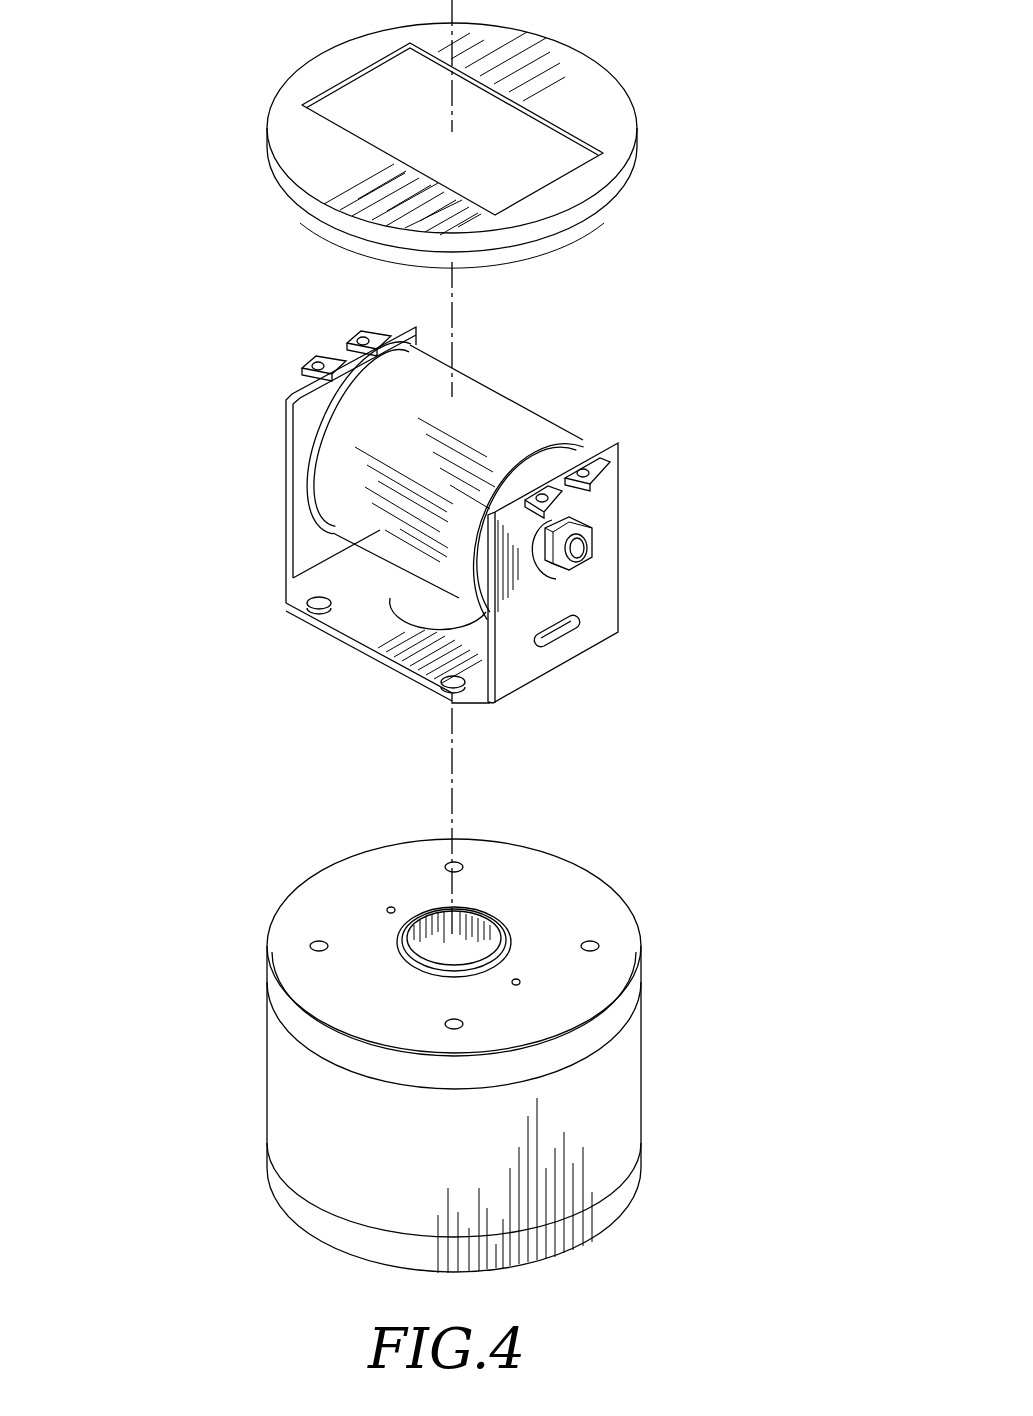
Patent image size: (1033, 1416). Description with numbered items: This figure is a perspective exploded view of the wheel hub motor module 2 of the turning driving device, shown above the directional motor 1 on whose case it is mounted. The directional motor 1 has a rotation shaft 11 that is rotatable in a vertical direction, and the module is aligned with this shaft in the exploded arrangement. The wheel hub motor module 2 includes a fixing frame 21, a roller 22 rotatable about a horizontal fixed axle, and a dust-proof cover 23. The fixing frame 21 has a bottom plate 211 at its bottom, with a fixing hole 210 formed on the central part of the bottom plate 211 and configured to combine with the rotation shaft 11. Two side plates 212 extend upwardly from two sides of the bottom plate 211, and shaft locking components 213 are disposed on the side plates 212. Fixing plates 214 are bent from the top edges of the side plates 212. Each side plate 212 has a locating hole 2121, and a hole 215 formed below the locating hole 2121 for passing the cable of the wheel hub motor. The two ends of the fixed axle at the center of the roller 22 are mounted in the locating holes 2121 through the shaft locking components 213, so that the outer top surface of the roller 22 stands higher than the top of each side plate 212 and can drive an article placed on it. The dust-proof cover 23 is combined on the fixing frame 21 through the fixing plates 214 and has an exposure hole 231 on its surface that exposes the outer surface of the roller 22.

The directional motor 1 is at (449, 1056).
The rotation shaft 11 is at (504, 950).
The wheel hub motor module 2 is at (275, 212).
The fixing frame 21 is at (278, 468).
The fixing hole 210 is at (407, 588).
The bottom plate 211 is at (342, 613).
The side plate 212 is at (508, 663).
The shaft locking component 213 is at (583, 553).
The fixing plate 214 is at (600, 467).
The hole 215 is at (560, 642).
The locating hole 2121 is at (343, 355).
The roller 22 is at (527, 417).
The dust-proof cover 23 is at (478, 145).
The exposure hole 231 is at (507, 100).